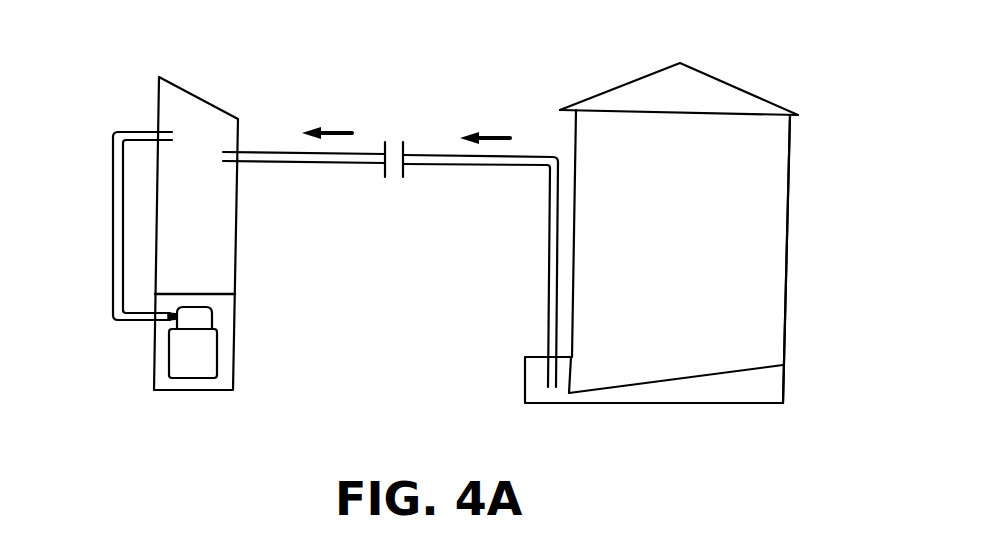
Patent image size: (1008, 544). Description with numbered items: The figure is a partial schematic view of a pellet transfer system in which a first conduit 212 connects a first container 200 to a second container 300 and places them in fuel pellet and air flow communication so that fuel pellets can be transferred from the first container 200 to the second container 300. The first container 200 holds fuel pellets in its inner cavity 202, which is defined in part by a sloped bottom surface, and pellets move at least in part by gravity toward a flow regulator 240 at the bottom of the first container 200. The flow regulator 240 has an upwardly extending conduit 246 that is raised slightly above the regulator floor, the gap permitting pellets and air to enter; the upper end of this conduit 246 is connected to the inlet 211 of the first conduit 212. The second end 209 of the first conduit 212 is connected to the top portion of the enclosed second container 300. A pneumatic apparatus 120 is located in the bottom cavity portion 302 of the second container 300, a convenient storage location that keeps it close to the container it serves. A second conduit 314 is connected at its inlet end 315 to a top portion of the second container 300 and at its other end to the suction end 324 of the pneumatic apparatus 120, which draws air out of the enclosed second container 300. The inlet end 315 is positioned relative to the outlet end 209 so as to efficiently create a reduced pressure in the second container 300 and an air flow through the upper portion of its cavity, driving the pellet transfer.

The second container 300 is at (236, 84).
The bottom cavity portion 302 is at (236, 340).
The pneumatic apparatus 120 is at (198, 372).
The inlet end 315 is at (168, 130).
The second conduit 314 is at (113, 232).
The suction end 324 is at (175, 323).
The second end 209 is at (225, 151).
The first conduit 212 is at (475, 166).
The first container 200 is at (764, 61).
The inner cavity 202 is at (768, 278).
The flow regulator 240 is at (525, 373).
The upwardly extending conduit 246 is at (553, 377).
The inlet 211 is at (558, 357).